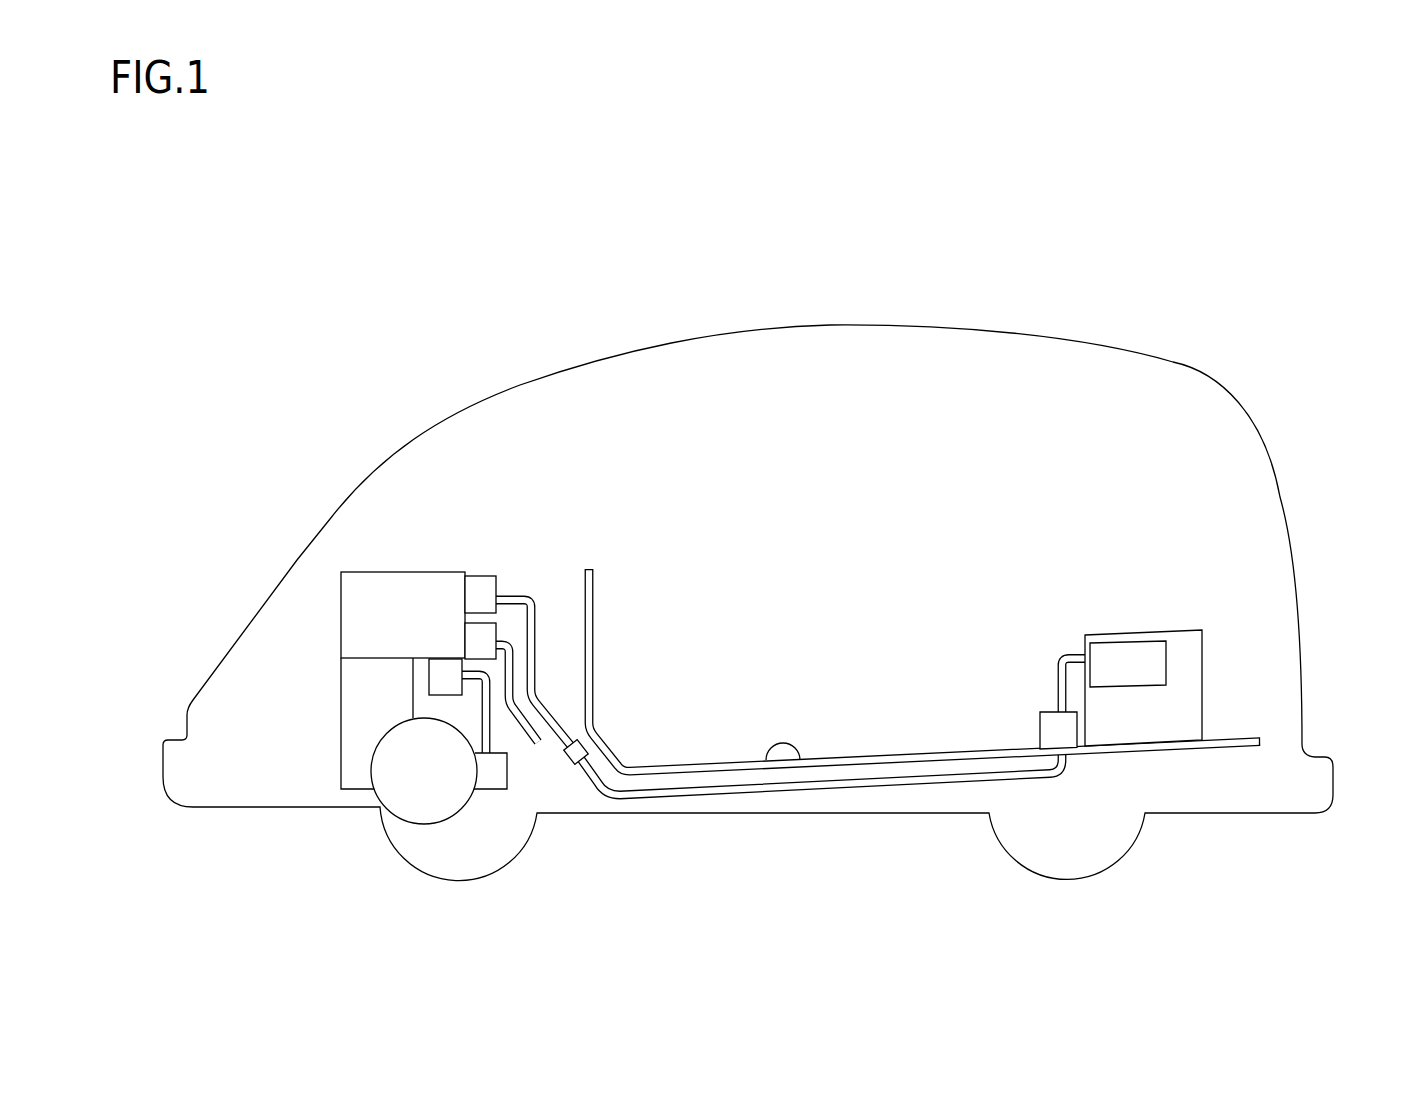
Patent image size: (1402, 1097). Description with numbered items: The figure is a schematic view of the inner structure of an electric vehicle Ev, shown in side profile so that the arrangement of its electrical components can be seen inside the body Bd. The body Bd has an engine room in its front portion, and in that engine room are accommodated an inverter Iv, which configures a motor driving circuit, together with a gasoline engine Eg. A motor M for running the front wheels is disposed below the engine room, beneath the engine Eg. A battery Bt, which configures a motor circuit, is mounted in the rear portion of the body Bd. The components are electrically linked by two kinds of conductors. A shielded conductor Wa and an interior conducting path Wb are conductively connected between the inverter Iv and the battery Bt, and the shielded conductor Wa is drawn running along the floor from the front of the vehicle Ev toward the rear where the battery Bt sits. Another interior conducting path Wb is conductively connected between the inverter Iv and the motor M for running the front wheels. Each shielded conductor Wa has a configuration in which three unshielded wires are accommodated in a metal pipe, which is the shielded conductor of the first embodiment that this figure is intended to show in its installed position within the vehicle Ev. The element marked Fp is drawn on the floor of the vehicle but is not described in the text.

The electric vehicle Ev is at (370, 378).
The body Bd is at (845, 327).
The interior conducting path Wb is at (530, 638).
The shielded conductor Wa is at (878, 788).
The inverter Iv is at (368, 587).
The gasoline engine Eg is at (348, 735).
The motor M is at (425, 805).
The fuel pump Fp is at (767, 763).
The battery Bt is at (1187, 672).